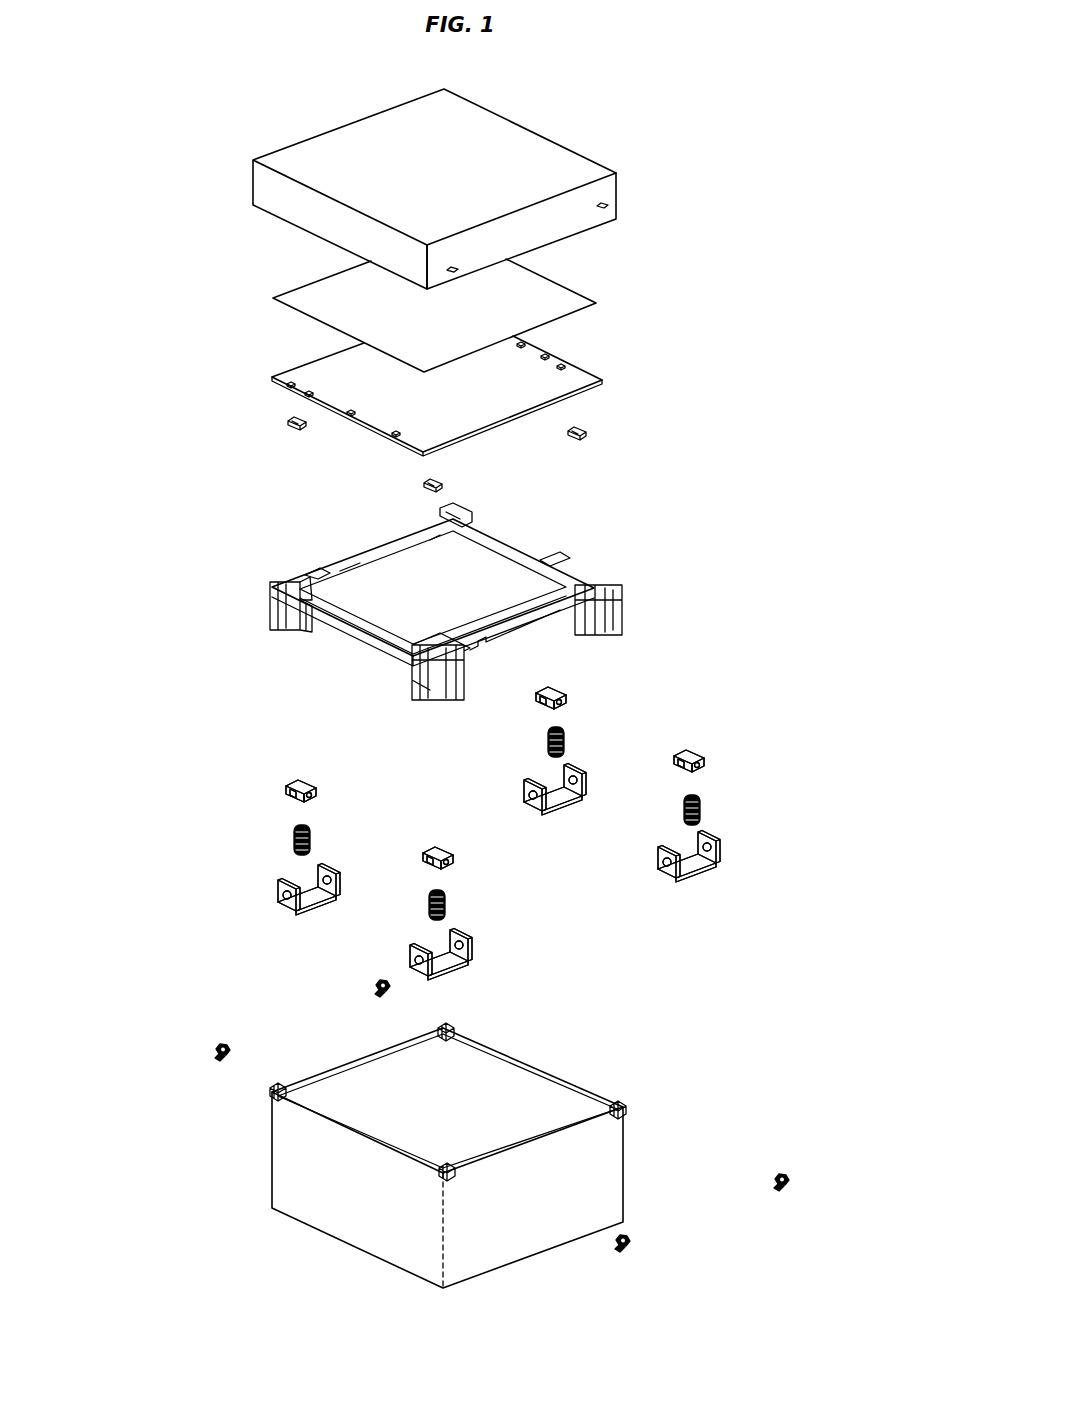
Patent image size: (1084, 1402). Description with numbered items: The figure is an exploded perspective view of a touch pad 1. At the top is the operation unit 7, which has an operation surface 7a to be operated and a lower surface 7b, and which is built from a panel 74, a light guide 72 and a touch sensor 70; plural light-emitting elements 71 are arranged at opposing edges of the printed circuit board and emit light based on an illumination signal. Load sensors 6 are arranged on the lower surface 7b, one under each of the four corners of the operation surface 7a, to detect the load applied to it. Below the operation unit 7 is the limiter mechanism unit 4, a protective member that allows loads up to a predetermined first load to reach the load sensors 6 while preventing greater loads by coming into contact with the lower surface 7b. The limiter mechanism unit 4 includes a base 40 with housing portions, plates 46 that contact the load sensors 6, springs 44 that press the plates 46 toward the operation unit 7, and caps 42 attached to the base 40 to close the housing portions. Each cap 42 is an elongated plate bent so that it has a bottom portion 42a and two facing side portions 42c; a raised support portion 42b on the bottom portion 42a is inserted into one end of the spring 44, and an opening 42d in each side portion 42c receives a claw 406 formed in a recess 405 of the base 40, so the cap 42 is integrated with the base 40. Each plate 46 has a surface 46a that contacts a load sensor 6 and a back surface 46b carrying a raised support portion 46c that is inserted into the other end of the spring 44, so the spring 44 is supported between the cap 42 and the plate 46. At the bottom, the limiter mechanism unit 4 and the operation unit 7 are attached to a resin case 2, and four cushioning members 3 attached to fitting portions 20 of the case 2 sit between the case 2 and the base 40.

The touch pad 1 is at (708, 73).
The case 2 is at (452, 1268).
The cushioning member 3 is at (375, 994).
The limiter mechanism unit 4 is at (735, 487).
The load sensor 6 is at (295, 432).
The operation unit 7 is at (736, 88).
The operation surface 7a is at (535, 148).
The lower surface 7b is at (572, 397).
The fitting portion 20 is at (441, 1025).
The base 40 is at (550, 563).
The cap 42 is at (214, 857).
The bottom portion 42a is at (308, 907).
The support portion 42b is at (288, 903).
The side portion 42c is at (325, 868).
The opening 42d is at (283, 895).
The spring 44 is at (547, 740).
The plate 46 is at (538, 700).
The surface 46a is at (550, 690).
The back surface 46b is at (562, 704).
The support portion 46c is at (553, 708).
The touch sensor 70 is at (570, 375).
The light-emitting element 71 is at (396, 433).
The light guide 72 is at (565, 297).
The panel 74 is at (616, 193).
The recess 405 is at (272, 618).
The claw 406 is at (272, 598).